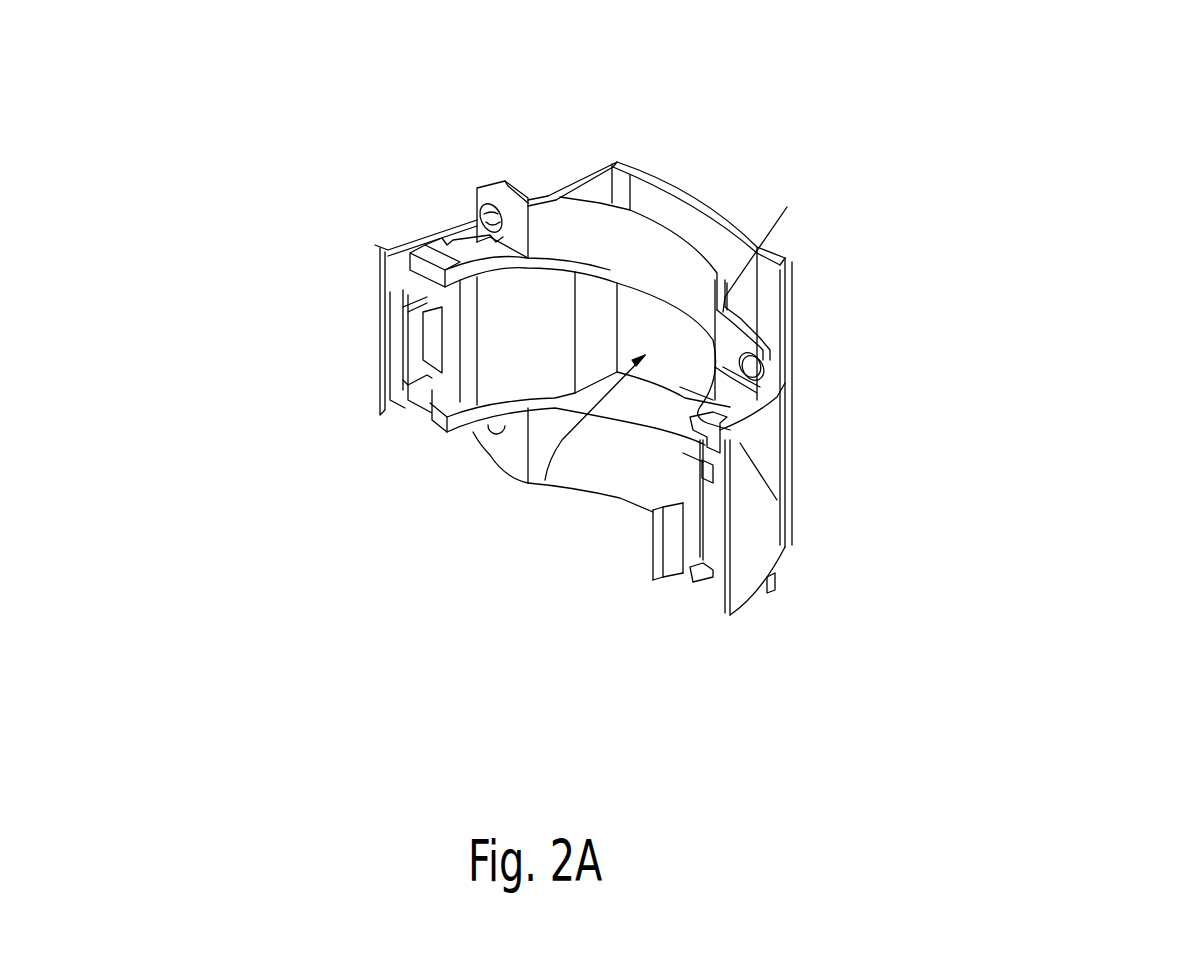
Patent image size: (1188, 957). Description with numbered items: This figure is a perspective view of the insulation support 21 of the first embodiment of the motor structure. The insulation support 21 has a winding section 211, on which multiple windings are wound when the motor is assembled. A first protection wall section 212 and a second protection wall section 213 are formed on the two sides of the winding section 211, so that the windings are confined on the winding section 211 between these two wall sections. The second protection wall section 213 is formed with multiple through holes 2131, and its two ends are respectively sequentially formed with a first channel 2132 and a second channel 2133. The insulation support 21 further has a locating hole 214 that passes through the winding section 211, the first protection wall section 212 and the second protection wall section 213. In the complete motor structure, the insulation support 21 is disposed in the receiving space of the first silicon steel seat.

The insulation support 21 is at (1025, 123).
The winding section 211 is at (707, 328).
The first protection wall section 212 is at (383, 233).
The second protection wall section 213 is at (795, 512).
The through holes 2131 is at (400, 232).
The first channel 2132 is at (768, 345).
The second channel 2133 is at (730, 405).
The locating hole 214 is at (545, 480).